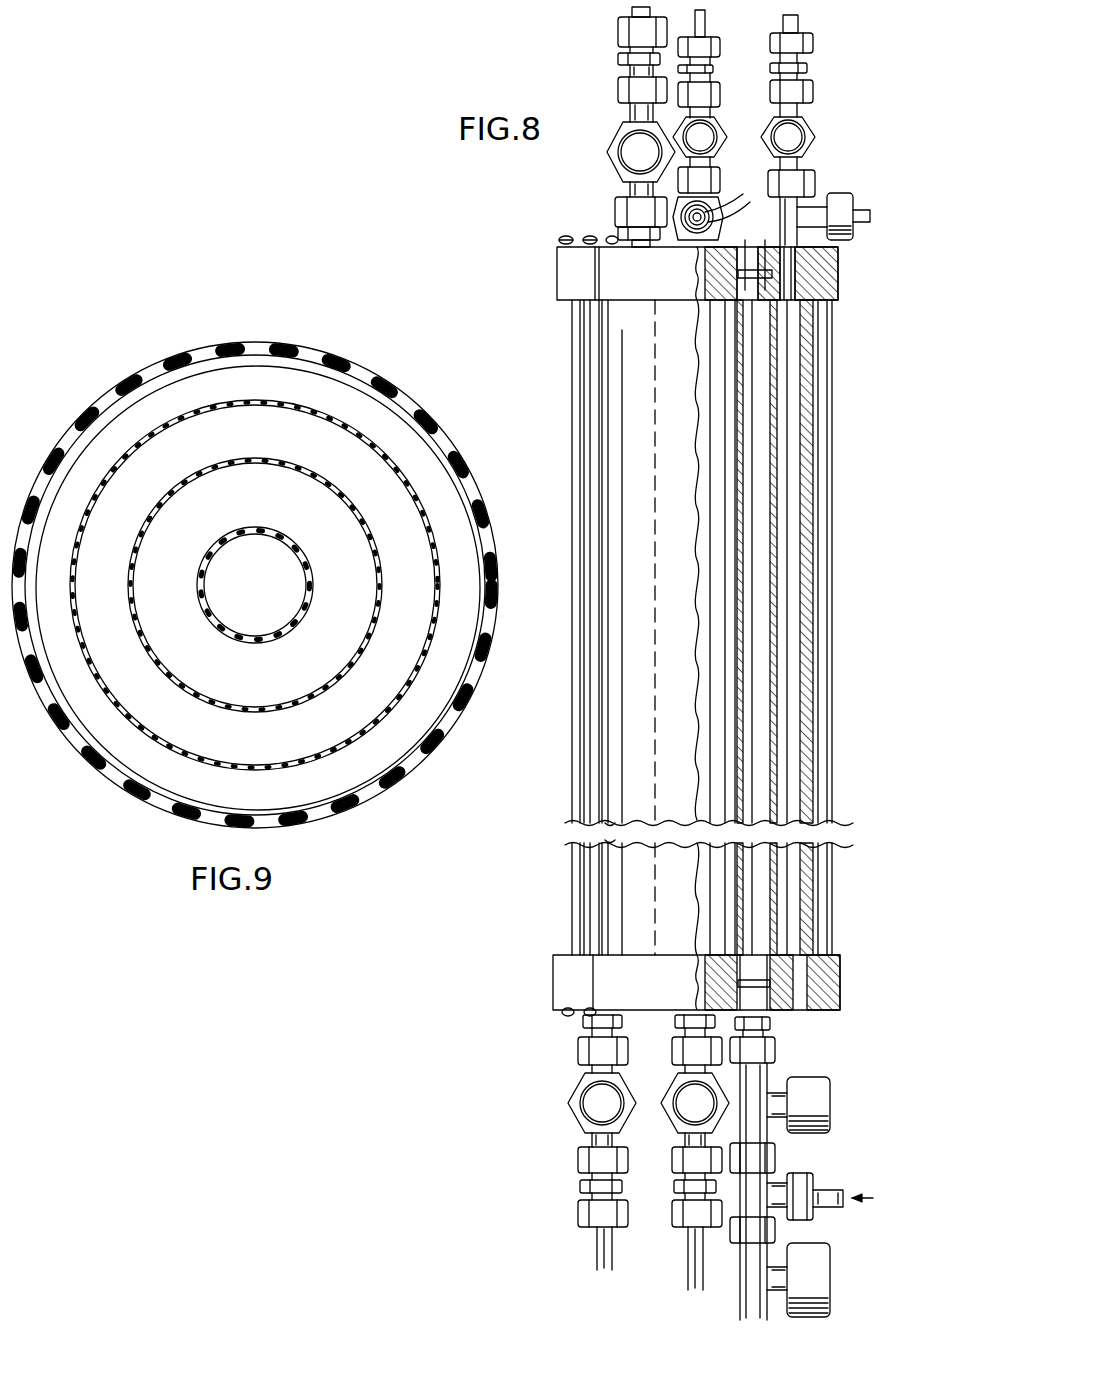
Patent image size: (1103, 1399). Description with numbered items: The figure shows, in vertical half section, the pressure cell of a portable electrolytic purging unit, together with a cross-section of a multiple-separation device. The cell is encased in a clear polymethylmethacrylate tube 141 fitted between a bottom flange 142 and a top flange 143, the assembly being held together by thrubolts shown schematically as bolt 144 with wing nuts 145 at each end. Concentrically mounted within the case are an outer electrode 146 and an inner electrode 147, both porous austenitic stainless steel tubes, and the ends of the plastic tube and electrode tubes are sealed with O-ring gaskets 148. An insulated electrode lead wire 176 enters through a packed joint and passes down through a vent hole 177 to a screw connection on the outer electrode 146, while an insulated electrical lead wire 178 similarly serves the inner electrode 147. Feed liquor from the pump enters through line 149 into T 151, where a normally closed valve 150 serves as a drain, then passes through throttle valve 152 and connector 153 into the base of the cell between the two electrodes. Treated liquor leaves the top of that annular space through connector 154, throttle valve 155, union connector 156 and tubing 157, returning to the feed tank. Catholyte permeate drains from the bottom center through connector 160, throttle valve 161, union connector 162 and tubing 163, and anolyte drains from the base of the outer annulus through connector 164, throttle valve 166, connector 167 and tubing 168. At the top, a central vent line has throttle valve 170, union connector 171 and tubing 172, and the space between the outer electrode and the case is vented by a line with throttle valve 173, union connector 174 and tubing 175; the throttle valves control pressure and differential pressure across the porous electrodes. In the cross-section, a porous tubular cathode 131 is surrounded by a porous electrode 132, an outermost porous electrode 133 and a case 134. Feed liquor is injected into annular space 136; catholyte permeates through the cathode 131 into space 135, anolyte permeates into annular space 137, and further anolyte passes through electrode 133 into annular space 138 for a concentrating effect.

In FIG. 9, the porous tubular cathode 131 is at (212, 542).
In FIG. 9, the porous electrode 132 is at (206, 477).
In FIG. 9, the outermost porous electrode 133 is at (142, 438).
In FIG. 9, the case 134 is at (212, 332).
In FIG. 9, the space 135 is at (262, 586).
In FIG. 9, the annular space 136 is at (275, 499).
In FIG. 9, the annular space 137 is at (332, 456).
In FIG. 9, the annular space 138 is at (276, 373).
In FIG. 8, the polymethylmethacrylate tube 141 is at (808, 622).
In FIG. 8, the bottom flange 142 is at (550, 968).
In FIG. 8, the top flange 143 is at (547, 258).
In FIG. 8, the bolt 144 is at (585, 854).
In FIG. 8, the wing nut 145 is at (597, 238).
In FIG. 8, the outer electrode 146 is at (721, 882).
In FIG. 8, the inner electrode 147 is at (735, 700).
In FIG. 8, the O-ring gaskets 148 is at (749, 264).
In FIG. 8, the line 149 is at (827, 1202).
In FIG. 8, the valve 150 is at (821, 1256).
In FIG. 8, the T 151 is at (776, 1166).
In FIG. 8, the throttle valve 152 is at (808, 1088).
In FIG. 8, the connector 153 is at (772, 1032).
In FIG. 8, the connector 154 is at (618, 194).
In FIG. 8, the throttle valve 155 is at (607, 140).
In FIG. 8, the union connector 156 is at (618, 60).
In FIG. 8, the tubing 157 is at (632, 12).
In FIG. 8, the connector 160 is at (676, 1030).
In FIG. 8, the throttle valve 161 is at (672, 1090).
In FIG. 8, the union connector 162 is at (678, 1186).
In FIG. 8, the tubing 163 is at (692, 1256).
In FIG. 8, the connector 164 is at (583, 1034).
In FIG. 8, the throttle valve 166 is at (572, 1094).
In FIG. 8, the connector 167 is at (582, 1186).
In FIG. 8, the tubing 168 is at (597, 1240).
In FIG. 8, the throttle valve 170 is at (712, 128).
In FIG. 8, the union connector 171 is at (712, 68).
In FIG. 8, the tubing 172 is at (714, 20).
In FIG. 8, the throttle valve 173 is at (810, 128).
In FIG. 8, the union connector 174 is at (808, 69).
In FIG. 8, the tubing 175 is at (800, 25).
In FIG. 8, the insulated electrode lead wire 176 is at (853, 215).
In FIG. 8, the vent hole 177 is at (828, 272).
In FIG. 8, the insulated electrical lead wire 178 is at (736, 192).